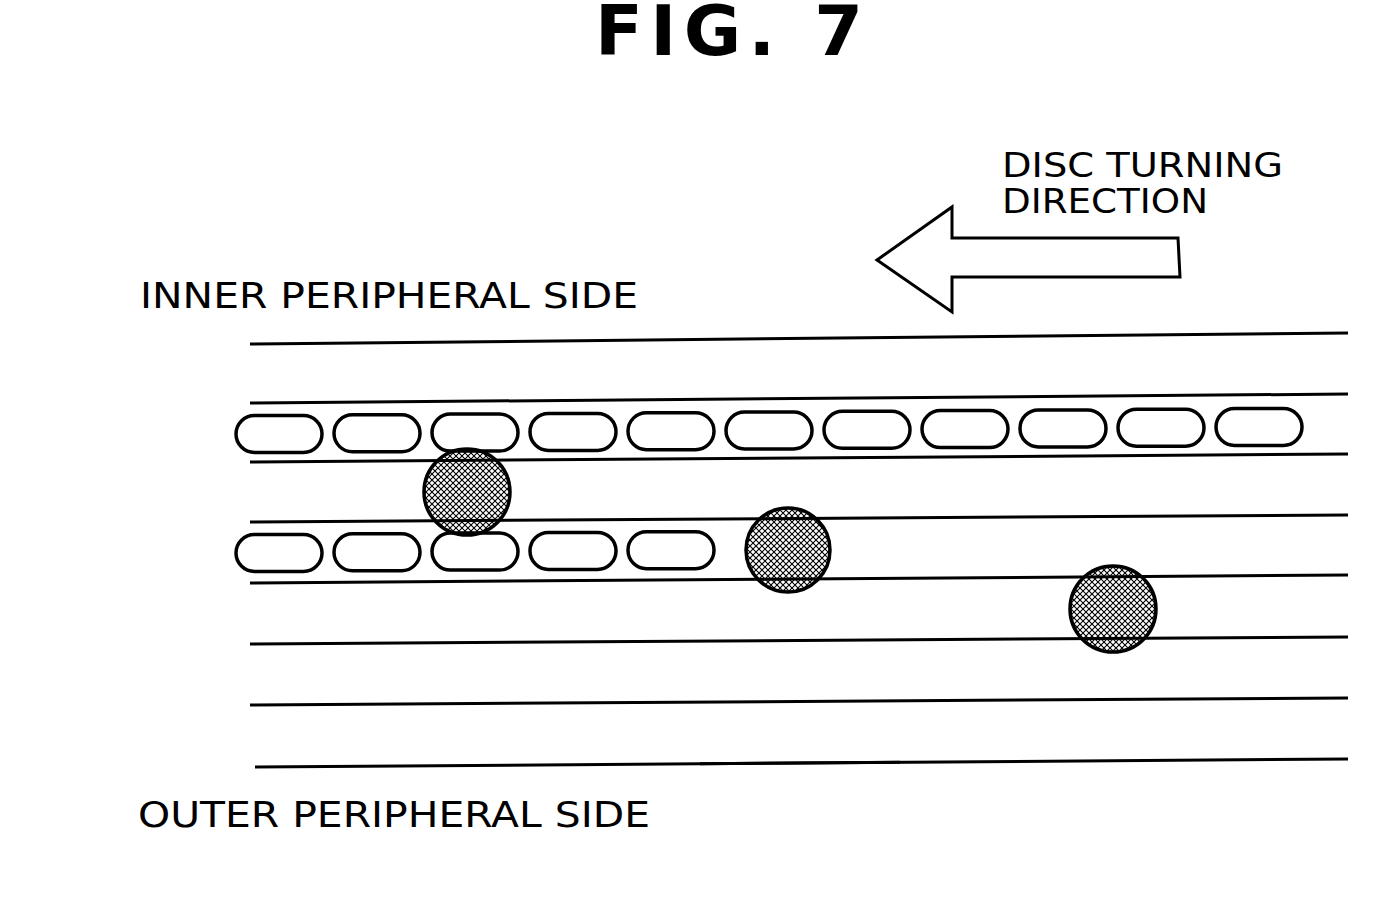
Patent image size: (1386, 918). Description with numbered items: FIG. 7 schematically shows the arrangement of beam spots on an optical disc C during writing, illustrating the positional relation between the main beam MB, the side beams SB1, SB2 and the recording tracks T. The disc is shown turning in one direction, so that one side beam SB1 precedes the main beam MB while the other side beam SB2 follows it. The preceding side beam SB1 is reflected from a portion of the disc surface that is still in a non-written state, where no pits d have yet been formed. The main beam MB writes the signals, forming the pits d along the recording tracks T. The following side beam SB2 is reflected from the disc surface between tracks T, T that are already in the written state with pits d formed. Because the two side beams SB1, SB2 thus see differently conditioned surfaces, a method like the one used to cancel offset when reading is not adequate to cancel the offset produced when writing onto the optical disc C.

The recording track T is at (322, 453).
The pit d is at (568, 425).
The side beam SB1 is at (1157, 606).
The side beam SB2 is at (512, 490).
The main beam MB is at (832, 548).
The optical disc C is at (826, 732).